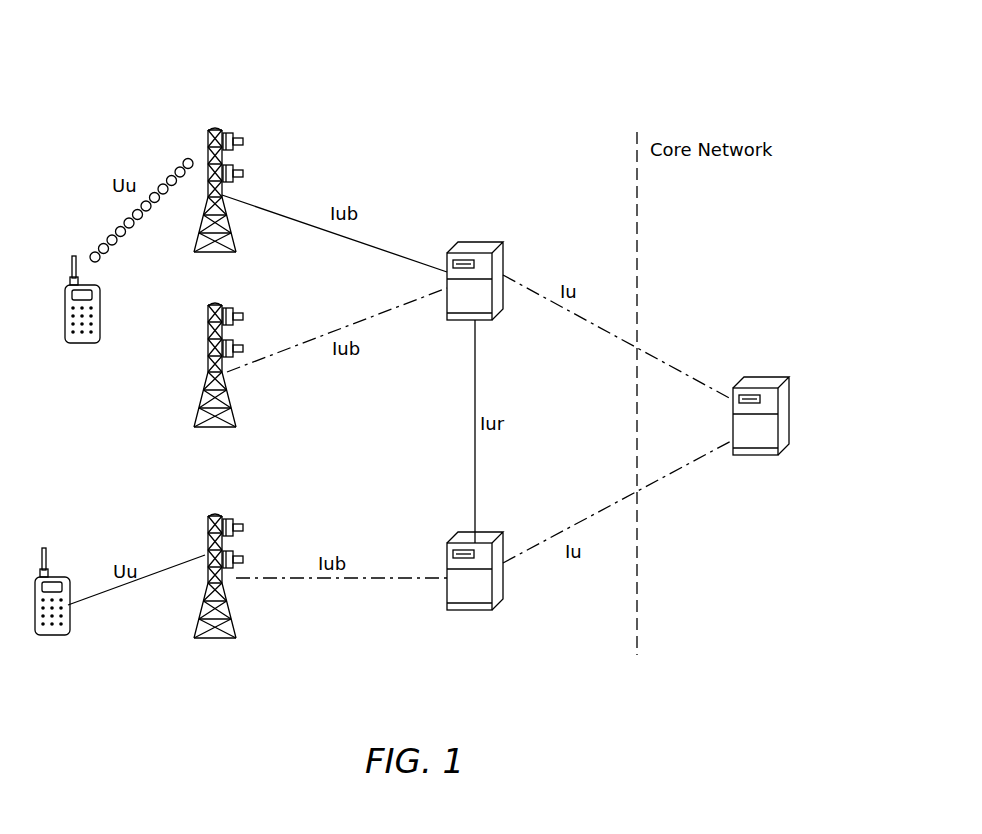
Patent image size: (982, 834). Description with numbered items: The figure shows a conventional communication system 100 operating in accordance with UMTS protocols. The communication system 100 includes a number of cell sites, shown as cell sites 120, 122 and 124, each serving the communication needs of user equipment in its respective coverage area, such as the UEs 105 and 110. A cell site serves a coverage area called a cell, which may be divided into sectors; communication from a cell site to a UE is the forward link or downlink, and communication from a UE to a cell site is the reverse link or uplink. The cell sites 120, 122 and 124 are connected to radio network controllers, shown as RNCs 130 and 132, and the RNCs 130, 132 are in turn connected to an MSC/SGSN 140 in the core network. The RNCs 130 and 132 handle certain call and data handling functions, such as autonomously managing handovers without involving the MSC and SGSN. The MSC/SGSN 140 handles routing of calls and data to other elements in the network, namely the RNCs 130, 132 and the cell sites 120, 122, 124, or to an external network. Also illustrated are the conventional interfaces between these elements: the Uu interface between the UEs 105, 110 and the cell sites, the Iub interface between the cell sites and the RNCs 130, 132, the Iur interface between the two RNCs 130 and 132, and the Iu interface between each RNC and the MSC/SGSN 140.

The communication system 100 is at (490, 62).
The UE 105 is at (100, 316).
The UE 110 is at (62, 575).
The cell site 120 is at (245, 124).
The cell site 122 is at (257, 310).
The cell site 124 is at (250, 511).
The RNC 130 is at (503, 256).
The RNC 132 is at (489, 532).
The MSC/SGSN 140 is at (769, 378).